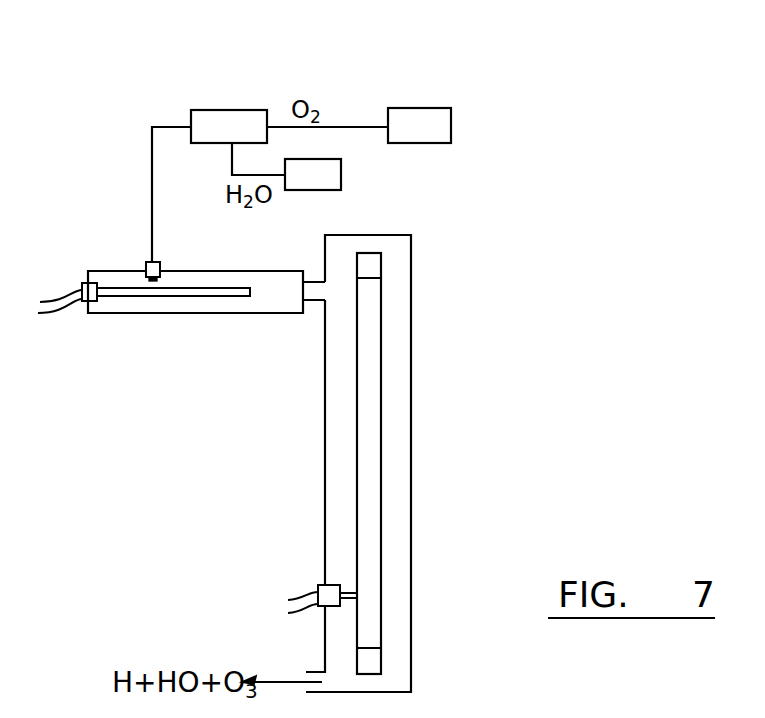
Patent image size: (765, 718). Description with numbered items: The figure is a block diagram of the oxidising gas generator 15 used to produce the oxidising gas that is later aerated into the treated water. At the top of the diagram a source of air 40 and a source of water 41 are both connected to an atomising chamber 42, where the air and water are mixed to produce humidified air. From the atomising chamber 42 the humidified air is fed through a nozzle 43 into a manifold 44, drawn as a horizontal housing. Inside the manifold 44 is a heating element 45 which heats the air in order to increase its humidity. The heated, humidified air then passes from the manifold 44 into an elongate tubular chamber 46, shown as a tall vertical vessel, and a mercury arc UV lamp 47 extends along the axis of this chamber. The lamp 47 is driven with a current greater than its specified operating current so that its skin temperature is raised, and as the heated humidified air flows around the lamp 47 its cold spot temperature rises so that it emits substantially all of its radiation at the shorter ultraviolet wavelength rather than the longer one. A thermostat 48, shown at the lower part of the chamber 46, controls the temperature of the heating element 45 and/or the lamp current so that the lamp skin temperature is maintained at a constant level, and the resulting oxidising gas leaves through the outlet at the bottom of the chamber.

The oxidising gas generator 15 is at (399, 463).
The source of air 40 is at (425, 118).
The source of water 41 is at (327, 174).
The atomising chamber 42 is at (232, 123).
The nozzle 43 is at (150, 265).
The manifold 44 is at (272, 304).
The heating element 45 is at (208, 289).
The elongate tubular chamber 46 is at (400, 287).
The mercury arc UV lamp 47 is at (372, 362).
The thermostat 48 is at (333, 598).